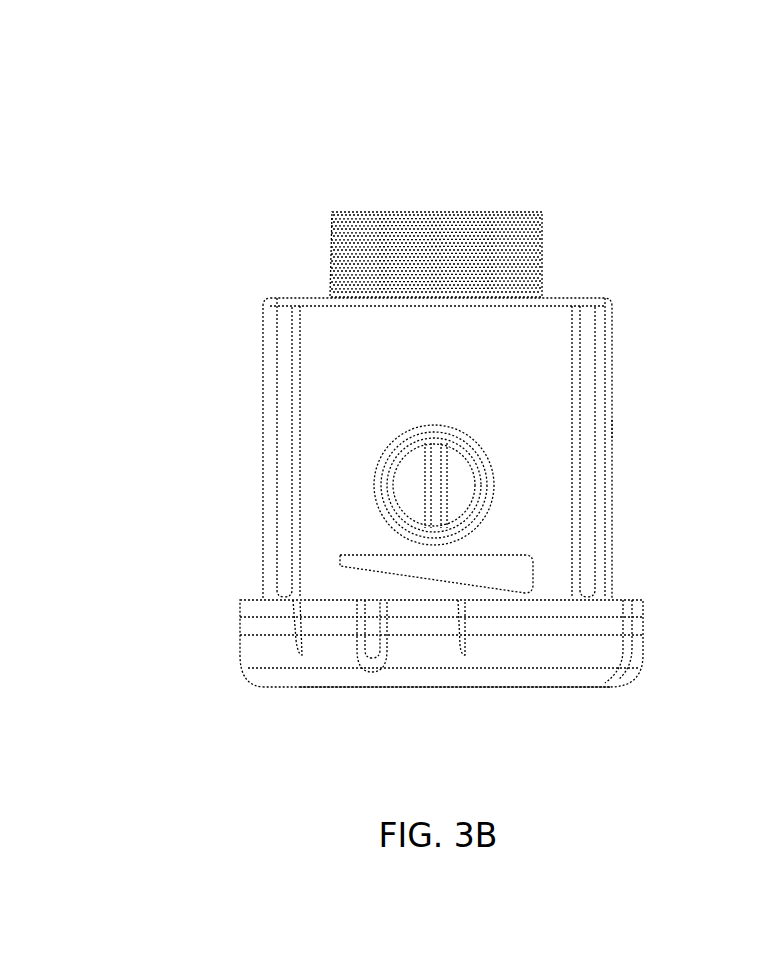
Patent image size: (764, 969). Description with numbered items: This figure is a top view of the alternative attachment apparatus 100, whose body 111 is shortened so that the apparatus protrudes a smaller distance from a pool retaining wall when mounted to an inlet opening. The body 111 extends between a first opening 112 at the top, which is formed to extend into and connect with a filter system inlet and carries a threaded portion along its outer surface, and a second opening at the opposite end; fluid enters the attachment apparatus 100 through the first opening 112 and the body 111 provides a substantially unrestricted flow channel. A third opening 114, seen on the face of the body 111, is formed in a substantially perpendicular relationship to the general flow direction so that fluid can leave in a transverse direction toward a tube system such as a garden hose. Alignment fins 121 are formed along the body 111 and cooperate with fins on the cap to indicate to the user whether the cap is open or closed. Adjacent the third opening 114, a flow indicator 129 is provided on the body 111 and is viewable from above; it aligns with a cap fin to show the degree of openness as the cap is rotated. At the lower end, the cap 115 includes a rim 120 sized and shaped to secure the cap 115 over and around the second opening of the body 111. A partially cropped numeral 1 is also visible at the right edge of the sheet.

The pump assembly 100 is at (236, 172).
The threaded connector 112 is at (437, 207).
The housing body 111 is at (542, 357).
The side channel 121 is at (282, 352).
The circular port 114 is at (458, 484).
The slot 129 is at (440, 571).
The base 120 is at (333, 632).
The base flange 115 is at (543, 685).
The cropped reference numeral 1 is at (685, 434).